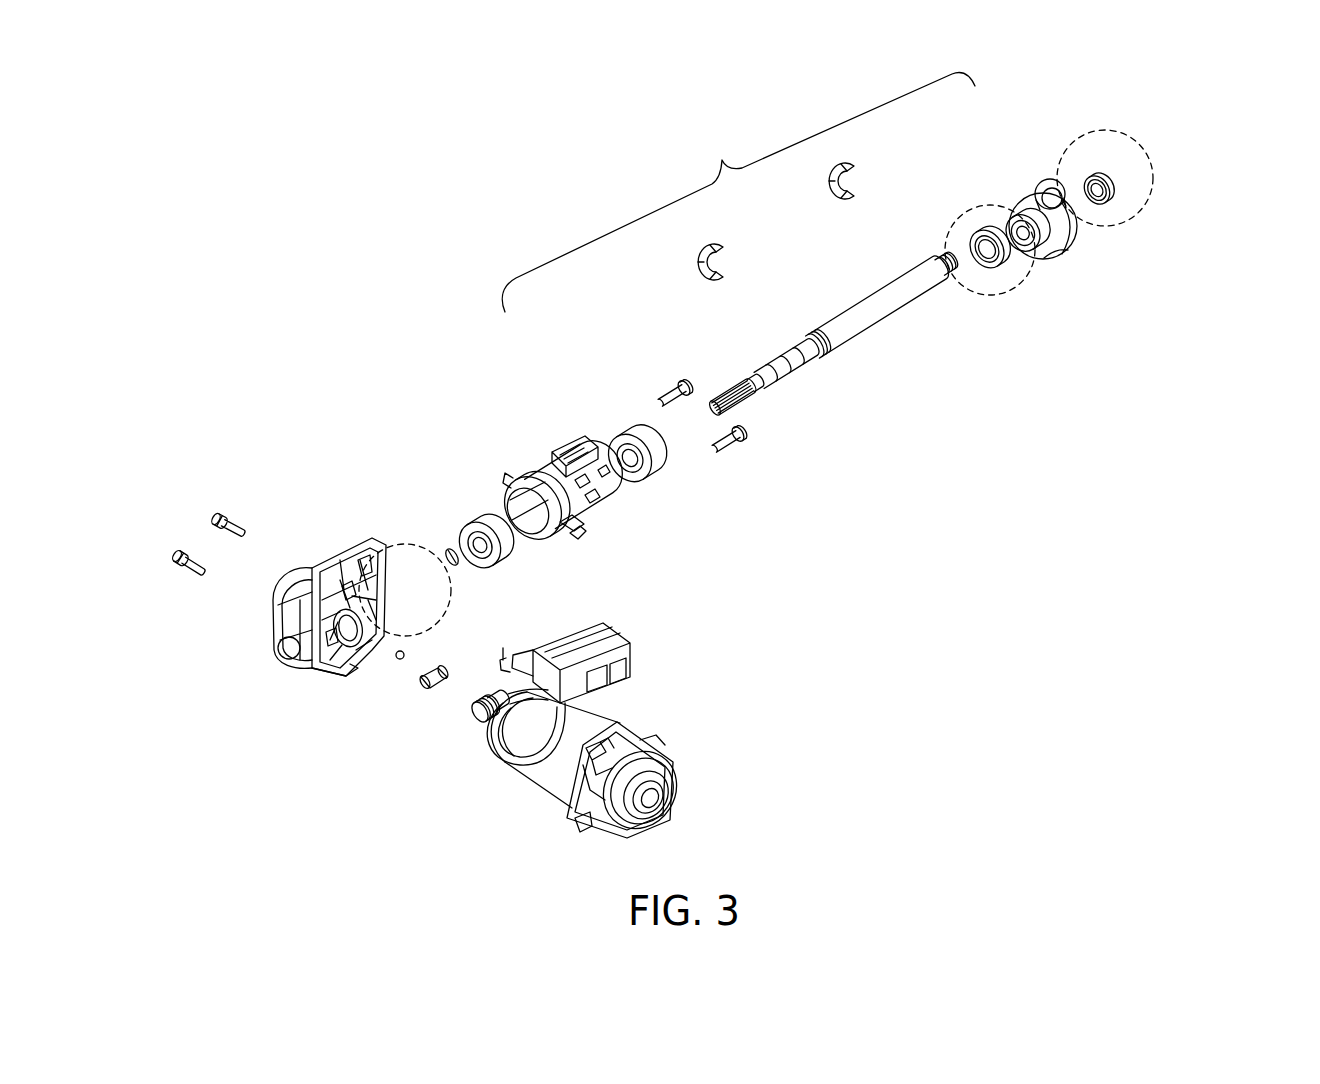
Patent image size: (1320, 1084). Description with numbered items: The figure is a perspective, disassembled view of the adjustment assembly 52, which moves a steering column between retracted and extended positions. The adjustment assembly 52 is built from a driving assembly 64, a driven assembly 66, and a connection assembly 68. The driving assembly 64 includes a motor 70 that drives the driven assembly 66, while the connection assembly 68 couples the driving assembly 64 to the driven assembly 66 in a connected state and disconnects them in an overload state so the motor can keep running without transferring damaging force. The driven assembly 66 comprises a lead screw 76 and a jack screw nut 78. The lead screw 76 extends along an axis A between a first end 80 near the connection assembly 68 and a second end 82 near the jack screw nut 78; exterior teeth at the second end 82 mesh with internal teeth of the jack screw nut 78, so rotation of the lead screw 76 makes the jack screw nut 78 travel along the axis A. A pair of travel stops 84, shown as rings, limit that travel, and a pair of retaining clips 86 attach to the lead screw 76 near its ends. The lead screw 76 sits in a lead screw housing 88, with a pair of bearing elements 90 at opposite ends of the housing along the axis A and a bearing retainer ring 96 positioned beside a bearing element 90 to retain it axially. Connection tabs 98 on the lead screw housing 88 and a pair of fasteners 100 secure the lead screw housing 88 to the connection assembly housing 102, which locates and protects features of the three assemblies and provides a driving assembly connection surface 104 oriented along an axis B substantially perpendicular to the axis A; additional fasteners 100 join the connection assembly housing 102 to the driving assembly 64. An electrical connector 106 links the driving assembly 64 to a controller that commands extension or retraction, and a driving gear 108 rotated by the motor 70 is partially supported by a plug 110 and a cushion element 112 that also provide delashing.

The adjustment assembly 52 is at (1224, 161).
The driving assembly 64 is at (710, 743).
The driven assembly 66 is at (738, 193).
The connection assembly 68 is at (413, 549).
The motor 70 is at (671, 779).
The lead screw 76 is at (846, 349).
The jack screw nut 78 is at (1066, 238).
The first end 80 is at (746, 406).
The second end 82 is at (955, 283).
The travel stops 84 is at (1110, 201).
The retaining clips 86 is at (856, 190).
The lead screw housing 88 is at (604, 522).
The bearing elements 90 is at (655, 467).
The bearing retainer ring 96 is at (459, 568).
The connection tabs 98 is at (578, 534).
The fasteners 100 is at (673, 386).
The connection assembly housing 102 is at (356, 546).
The driving assembly connection surface 104 is at (326, 666).
The electrical connector 106 is at (628, 642).
The driving gear 108 is at (472, 713).
The plug 110 is at (425, 682).
The cushion element 112 is at (406, 653).
The axis A is at (1112, 181).
The axis B is at (650, 802).